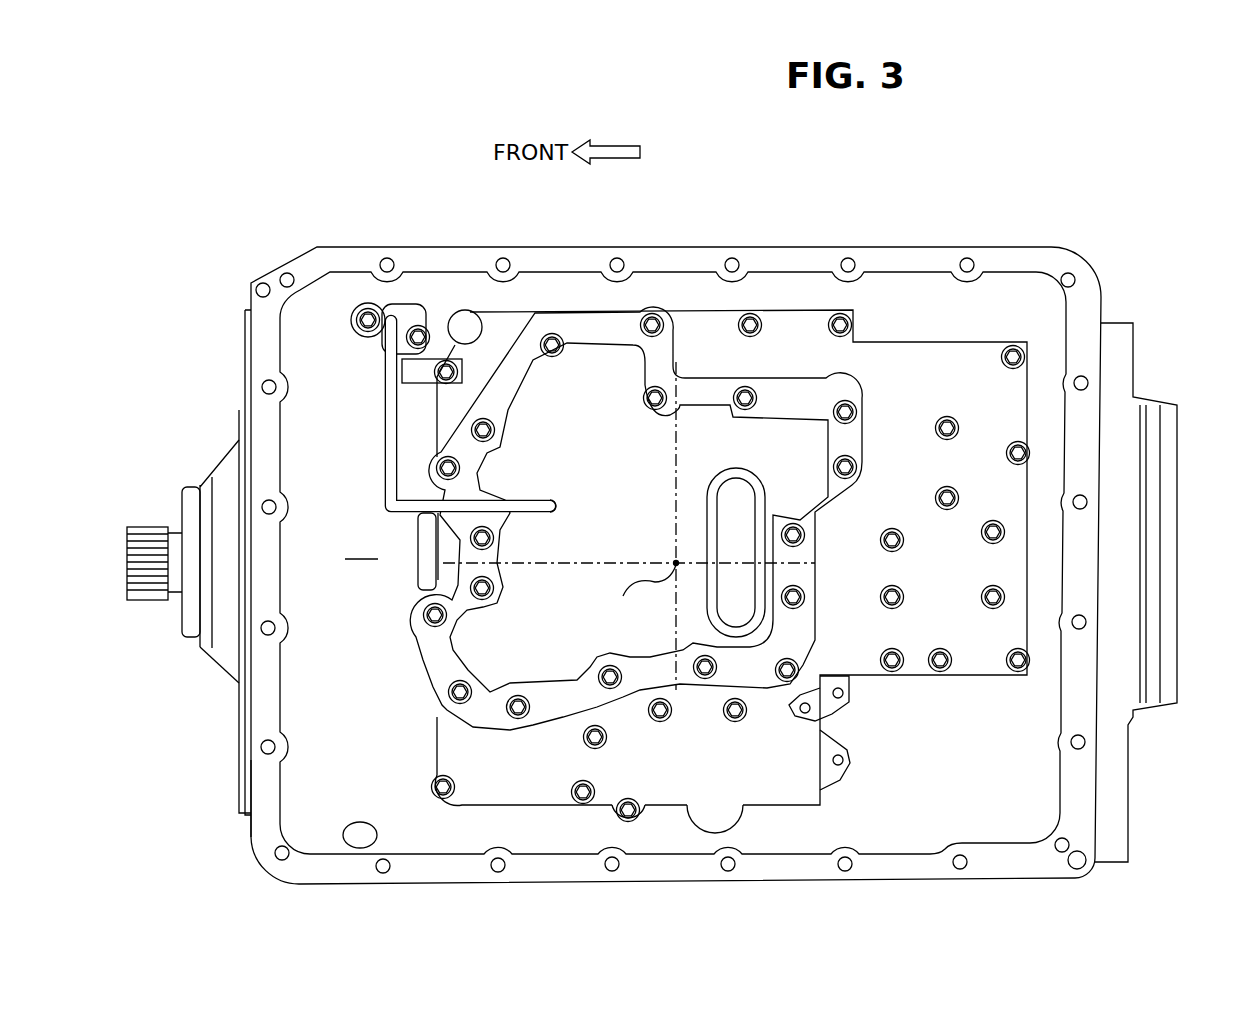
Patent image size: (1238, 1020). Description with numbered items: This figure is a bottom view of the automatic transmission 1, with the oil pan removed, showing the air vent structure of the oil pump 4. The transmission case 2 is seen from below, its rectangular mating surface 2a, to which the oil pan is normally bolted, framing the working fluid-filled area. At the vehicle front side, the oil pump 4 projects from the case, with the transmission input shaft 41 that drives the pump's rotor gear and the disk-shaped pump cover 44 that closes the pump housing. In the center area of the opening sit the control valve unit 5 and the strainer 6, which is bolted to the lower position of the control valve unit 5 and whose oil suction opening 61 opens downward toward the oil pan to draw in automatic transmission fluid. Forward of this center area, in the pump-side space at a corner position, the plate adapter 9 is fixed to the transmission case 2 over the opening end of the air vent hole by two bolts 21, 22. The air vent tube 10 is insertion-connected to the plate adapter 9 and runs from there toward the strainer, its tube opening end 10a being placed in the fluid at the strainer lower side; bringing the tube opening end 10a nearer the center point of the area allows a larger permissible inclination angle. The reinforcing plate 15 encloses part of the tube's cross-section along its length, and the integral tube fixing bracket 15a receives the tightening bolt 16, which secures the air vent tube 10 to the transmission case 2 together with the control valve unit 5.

The automatic transmission 1 is at (733, 140).
The transmission case 2 is at (886, 246).
The mating surface 2a is at (270, 833).
The oil pump 4 is at (200, 476).
The transmission input shaft 41 is at (150, 545).
The pump cover 44 is at (208, 643).
The control valve unit 5 is at (800, 308).
The strainer 6 is at (648, 298).
The plate adapter 9 is at (381, 305).
The air vent tube 10 is at (503, 496).
The tube opening end 10a is at (553, 503).
The reinforcing plate 15 is at (393, 567).
The tube fixing bracket 15a is at (443, 357).
The tightening bolt 16 is at (438, 364).
The bolt 21 is at (355, 312).
The bolt 22 is at (400, 306).
The oil suction opening 61 is at (757, 490).